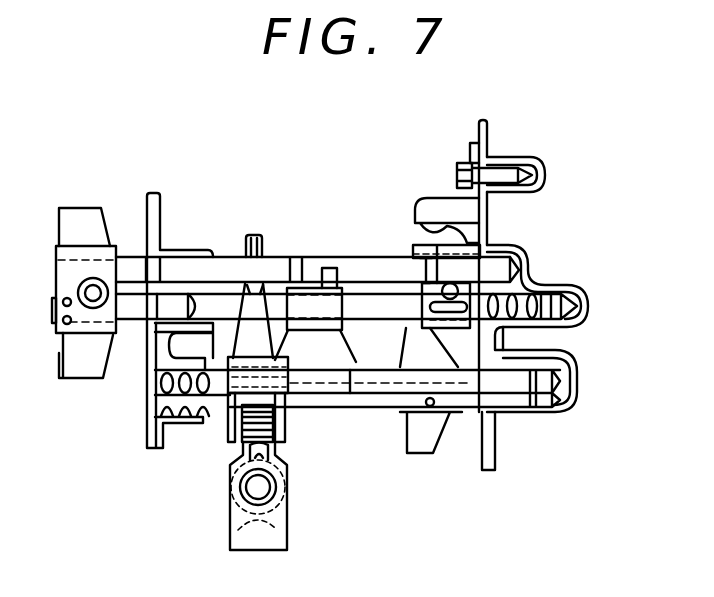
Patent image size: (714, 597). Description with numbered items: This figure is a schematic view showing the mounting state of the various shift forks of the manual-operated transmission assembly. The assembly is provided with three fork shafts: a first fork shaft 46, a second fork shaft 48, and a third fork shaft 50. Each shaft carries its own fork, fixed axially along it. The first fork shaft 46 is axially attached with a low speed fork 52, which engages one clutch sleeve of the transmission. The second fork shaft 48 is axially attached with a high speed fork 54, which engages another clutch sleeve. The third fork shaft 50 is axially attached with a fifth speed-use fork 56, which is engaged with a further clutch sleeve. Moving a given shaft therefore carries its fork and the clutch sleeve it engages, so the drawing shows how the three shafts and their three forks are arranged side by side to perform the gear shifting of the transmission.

The first fork shaft 46 is at (343, 402).
The second fork shaft 48 is at (508, 377).
The third fork shaft 50 is at (228, 272).
The low speed fork 52 is at (424, 440).
The high speed fork 54 is at (256, 236).
The fifth speed-use fork 56 is at (82, 228).